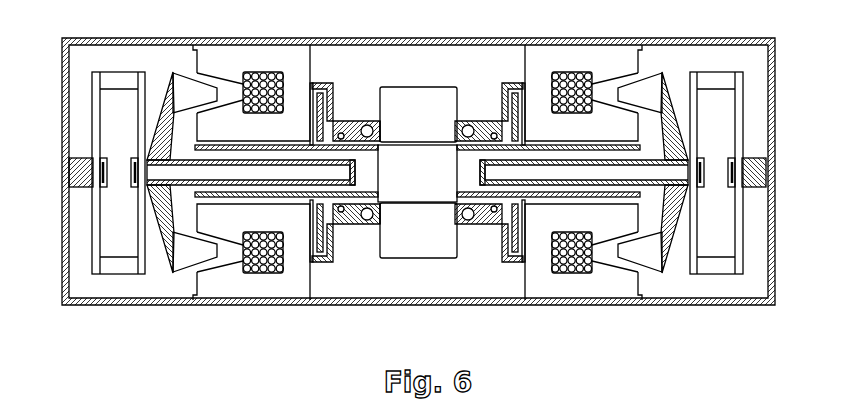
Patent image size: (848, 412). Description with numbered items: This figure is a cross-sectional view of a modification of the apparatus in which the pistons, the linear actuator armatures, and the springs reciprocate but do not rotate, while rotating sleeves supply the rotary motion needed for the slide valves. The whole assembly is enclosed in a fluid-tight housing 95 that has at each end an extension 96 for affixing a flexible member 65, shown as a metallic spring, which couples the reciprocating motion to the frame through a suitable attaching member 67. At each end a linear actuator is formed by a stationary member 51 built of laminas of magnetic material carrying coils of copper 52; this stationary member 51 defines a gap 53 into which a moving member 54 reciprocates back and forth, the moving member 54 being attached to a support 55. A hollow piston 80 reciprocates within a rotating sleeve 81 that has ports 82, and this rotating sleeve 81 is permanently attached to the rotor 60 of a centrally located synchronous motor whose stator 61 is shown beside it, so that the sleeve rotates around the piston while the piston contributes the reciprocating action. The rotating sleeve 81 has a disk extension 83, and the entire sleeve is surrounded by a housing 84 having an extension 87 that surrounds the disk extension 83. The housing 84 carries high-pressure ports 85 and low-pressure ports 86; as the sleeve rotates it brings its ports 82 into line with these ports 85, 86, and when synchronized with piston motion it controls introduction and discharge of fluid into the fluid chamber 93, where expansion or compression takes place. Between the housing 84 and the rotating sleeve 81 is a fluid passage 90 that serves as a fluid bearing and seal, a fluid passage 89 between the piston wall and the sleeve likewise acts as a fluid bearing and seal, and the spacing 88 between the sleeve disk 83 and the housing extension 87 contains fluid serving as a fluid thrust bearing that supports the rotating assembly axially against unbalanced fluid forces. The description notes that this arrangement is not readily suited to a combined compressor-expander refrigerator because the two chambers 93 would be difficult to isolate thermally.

The stationary member 51 is at (204, 67).
The coils of copper 52 is at (268, 268).
The gap 53 is at (232, 257).
The moving member 54 is at (174, 261).
The support 55 is at (163, 250).
The rotor 60 is at (428, 181).
The stator 61 is at (413, 111).
The elastic member 65 is at (122, 267).
The attaching member 67 is at (706, 163).
The hollow piston 80 is at (220, 184).
The rotating sleeve 81 is at (355, 142).
The ports 82 is at (342, 136).
The disk extension 83 is at (320, 93).
The housing 84 is at (358, 226).
The high-pressure ports 85 is at (343, 209).
The low-pressure ports 86 is at (460, 128).
The housing extension 87 is at (333, 83).
The spacing 88 is at (310, 127).
The fluid passage 89 is at (253, 194).
The fluid passage 90 is at (373, 204).
The fluid chamber 93 is at (360, 181).
The fluid-tight housing 95 is at (478, 304).
The extension 96 is at (66, 168).